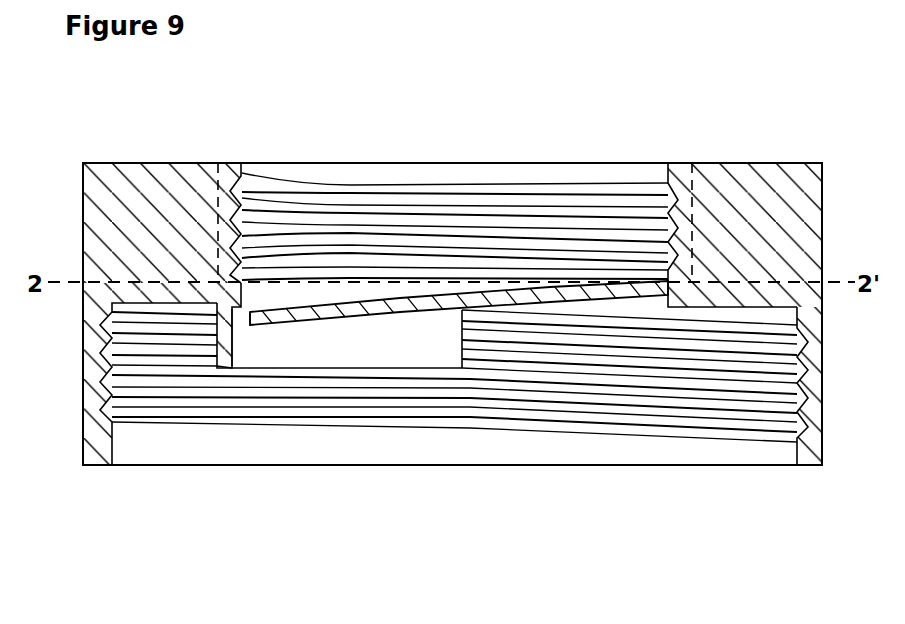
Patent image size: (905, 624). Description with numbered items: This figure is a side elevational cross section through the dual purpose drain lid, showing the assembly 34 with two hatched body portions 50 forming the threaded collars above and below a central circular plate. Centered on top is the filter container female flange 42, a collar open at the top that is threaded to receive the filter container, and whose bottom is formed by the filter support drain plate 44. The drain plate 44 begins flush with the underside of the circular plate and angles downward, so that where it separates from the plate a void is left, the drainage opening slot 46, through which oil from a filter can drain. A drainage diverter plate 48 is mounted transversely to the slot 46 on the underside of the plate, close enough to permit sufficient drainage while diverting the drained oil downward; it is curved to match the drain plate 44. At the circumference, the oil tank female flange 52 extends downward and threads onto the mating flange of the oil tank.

The self-adjusting valve assembly 34 is at (831, 388).
The filter container female flange 42 is at (293, 160).
The filter support drain plate 44 is at (318, 322).
The drainage opening slot 46 is at (237, 320).
The drainage diverter plate 48 is at (222, 342).
The cap body 50 is at (131, 160).
The oil tank female flange 52 is at (83, 372).